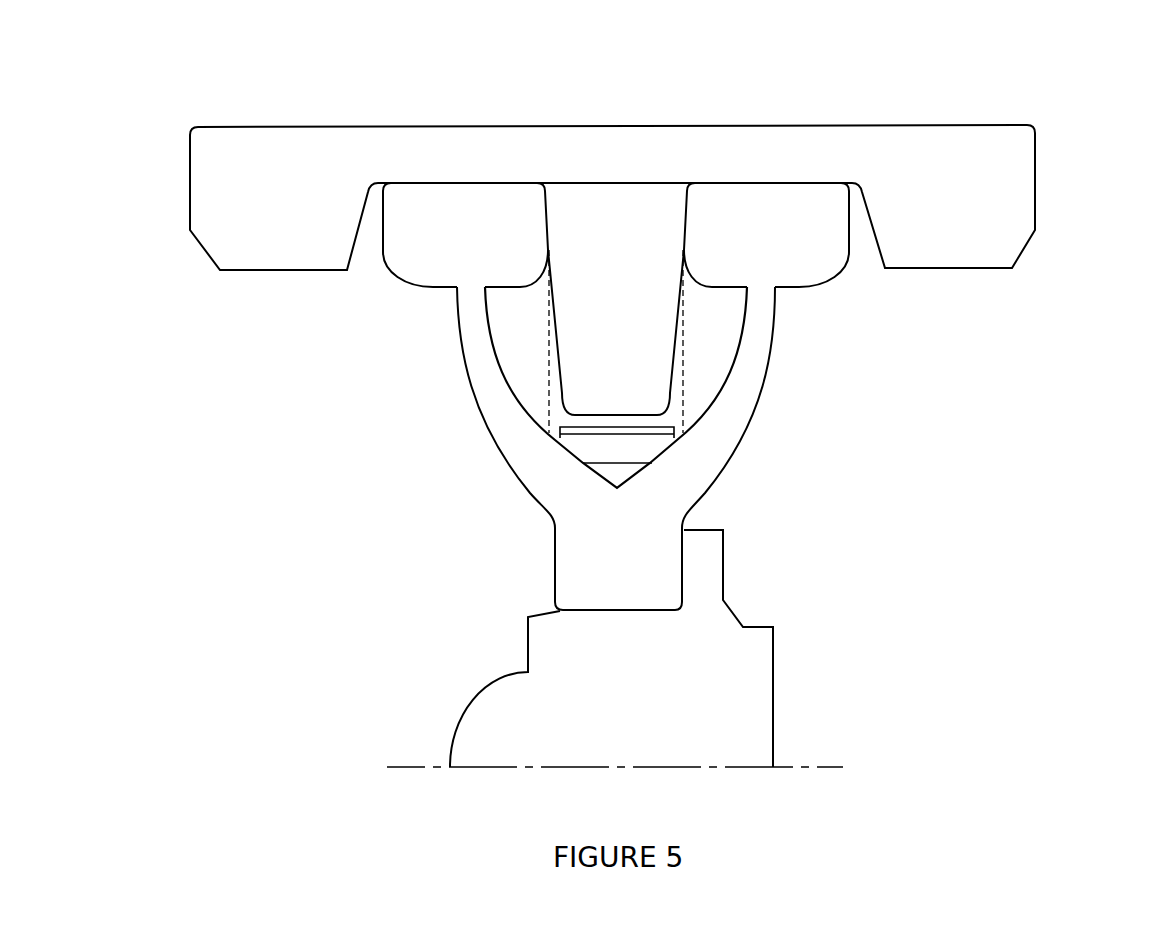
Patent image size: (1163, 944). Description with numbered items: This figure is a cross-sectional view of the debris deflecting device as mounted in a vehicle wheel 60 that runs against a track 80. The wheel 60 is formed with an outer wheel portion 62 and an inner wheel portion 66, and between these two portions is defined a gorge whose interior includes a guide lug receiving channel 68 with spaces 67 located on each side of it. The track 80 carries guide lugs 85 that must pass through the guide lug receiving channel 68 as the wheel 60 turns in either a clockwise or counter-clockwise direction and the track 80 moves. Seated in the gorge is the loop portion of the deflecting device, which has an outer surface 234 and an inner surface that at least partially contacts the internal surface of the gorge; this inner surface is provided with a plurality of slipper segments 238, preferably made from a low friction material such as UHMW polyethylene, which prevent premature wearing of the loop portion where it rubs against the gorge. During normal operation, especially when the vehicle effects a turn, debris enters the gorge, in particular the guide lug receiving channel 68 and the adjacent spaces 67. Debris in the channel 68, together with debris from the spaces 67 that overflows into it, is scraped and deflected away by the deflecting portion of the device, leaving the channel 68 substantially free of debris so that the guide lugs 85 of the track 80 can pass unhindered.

The track 80 is at (1018, 137).
The wheel 60 is at (766, 232).
The spaces 67 is at (508, 308).
The inner wheel portion 66 is at (565, 448).
The outer wheel portion 62 is at (475, 345).
The guide lugs 85 is at (612, 348).
The guide lug receiving channel 68 is at (674, 417).
The outer surface 234 is at (617, 430).
The slipper segments 238 is at (615, 452).